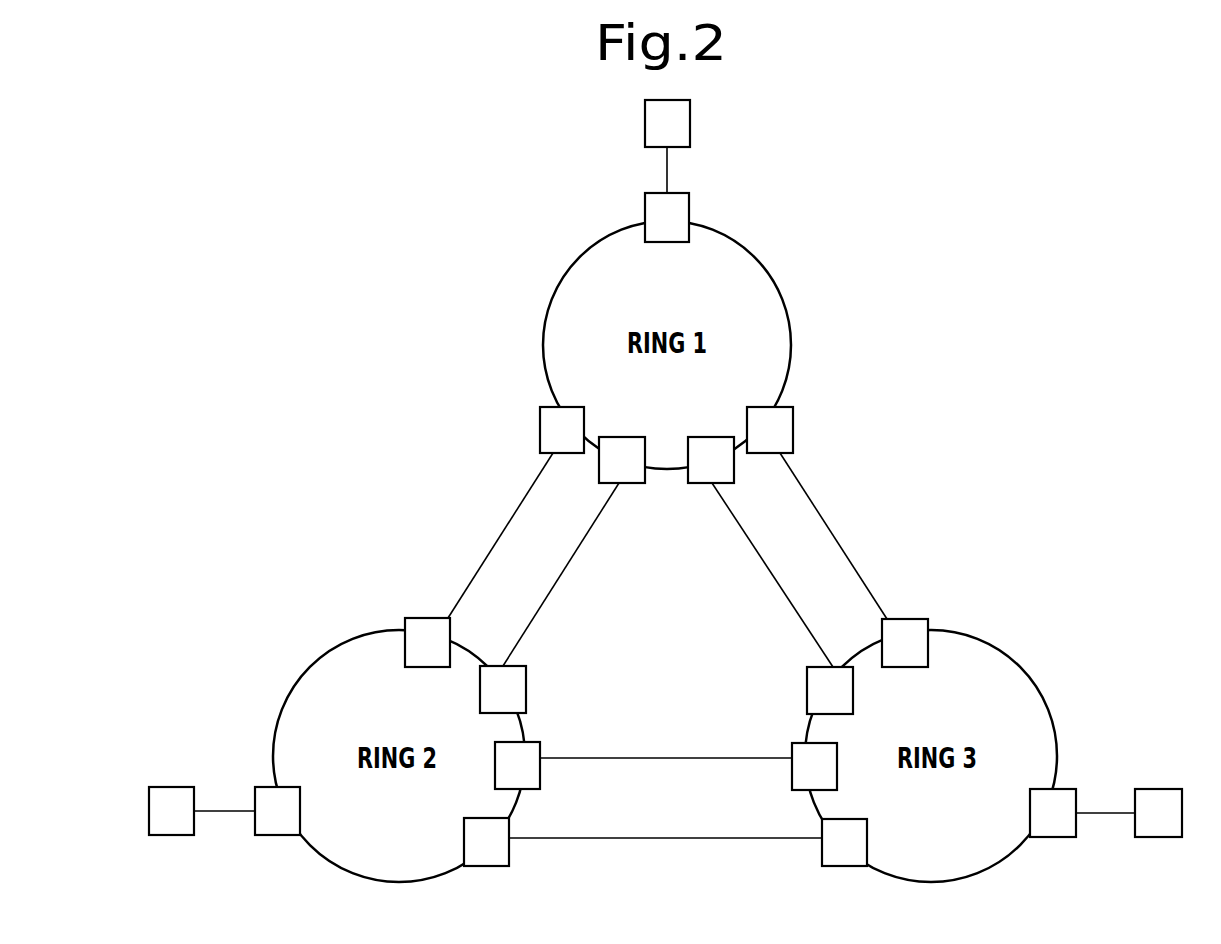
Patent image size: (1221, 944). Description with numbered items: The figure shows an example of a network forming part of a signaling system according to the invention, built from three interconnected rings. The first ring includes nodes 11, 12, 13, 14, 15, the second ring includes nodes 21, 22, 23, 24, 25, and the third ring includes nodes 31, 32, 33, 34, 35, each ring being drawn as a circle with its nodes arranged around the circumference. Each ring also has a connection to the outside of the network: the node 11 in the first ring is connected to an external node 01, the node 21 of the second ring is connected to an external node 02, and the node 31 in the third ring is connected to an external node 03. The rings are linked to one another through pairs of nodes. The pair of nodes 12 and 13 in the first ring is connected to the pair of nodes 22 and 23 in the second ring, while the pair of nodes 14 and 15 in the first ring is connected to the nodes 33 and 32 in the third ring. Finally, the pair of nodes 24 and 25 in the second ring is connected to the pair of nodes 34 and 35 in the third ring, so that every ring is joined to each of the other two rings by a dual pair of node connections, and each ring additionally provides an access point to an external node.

The external node 01 is at (667, 123).
The external node 02 is at (171, 811).
The external node 03 is at (1158, 813).
The node 11 is at (667, 217).
The node 12 is at (562, 430).
The node 13 is at (622, 460).
The node 14 is at (711, 460).
The node 15 is at (770, 430).
The node 21 is at (277, 811).
The node 22 is at (427, 642).
The node 23 is at (503, 689).
The node 24 is at (517, 765).
The node 25 is at (486, 842).
The node 31 is at (1053, 813).
The node 32 is at (905, 643).
The node 33 is at (830, 690).
The node 34 is at (814, 766).
The node 35 is at (844, 842).